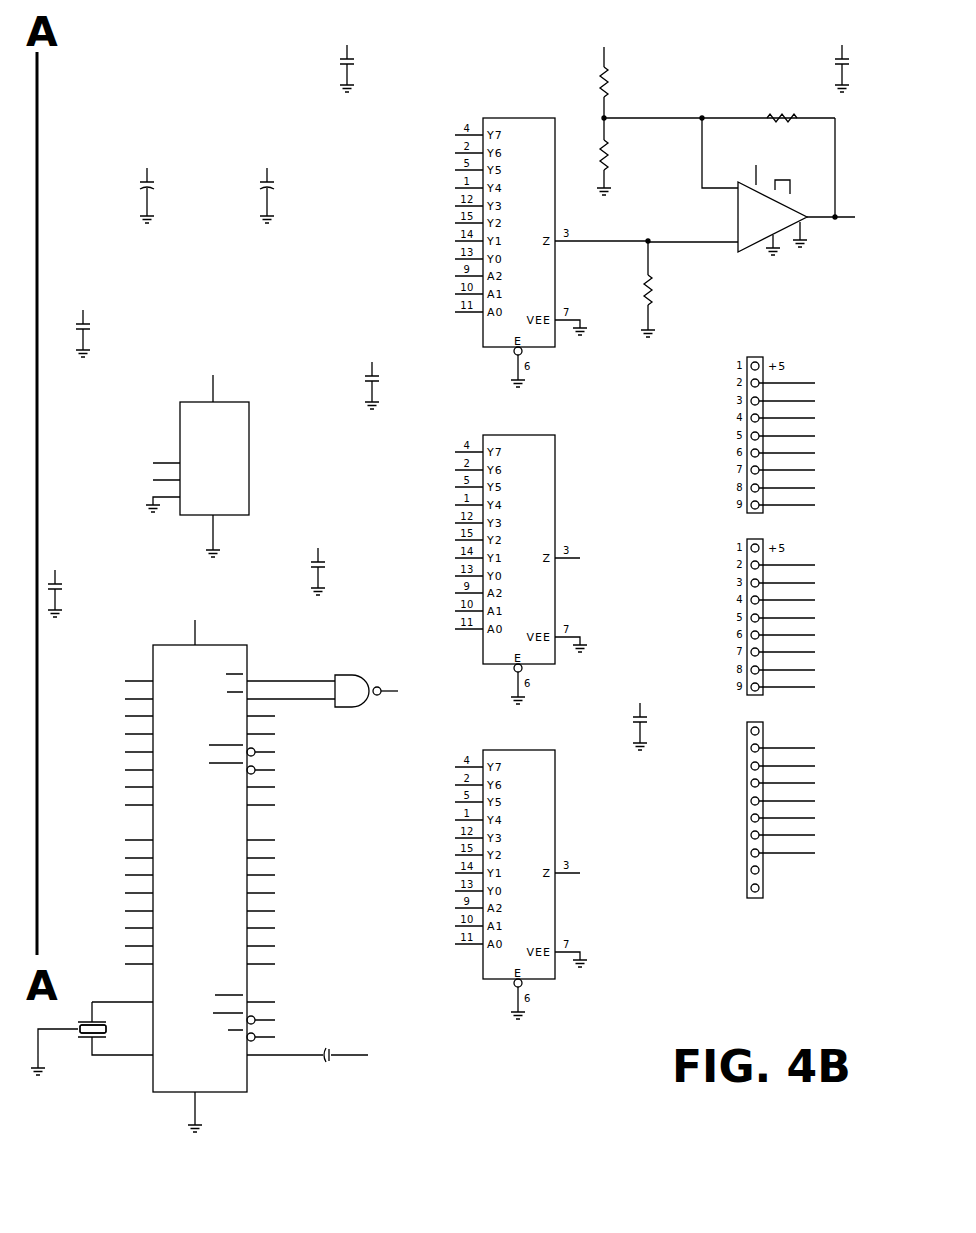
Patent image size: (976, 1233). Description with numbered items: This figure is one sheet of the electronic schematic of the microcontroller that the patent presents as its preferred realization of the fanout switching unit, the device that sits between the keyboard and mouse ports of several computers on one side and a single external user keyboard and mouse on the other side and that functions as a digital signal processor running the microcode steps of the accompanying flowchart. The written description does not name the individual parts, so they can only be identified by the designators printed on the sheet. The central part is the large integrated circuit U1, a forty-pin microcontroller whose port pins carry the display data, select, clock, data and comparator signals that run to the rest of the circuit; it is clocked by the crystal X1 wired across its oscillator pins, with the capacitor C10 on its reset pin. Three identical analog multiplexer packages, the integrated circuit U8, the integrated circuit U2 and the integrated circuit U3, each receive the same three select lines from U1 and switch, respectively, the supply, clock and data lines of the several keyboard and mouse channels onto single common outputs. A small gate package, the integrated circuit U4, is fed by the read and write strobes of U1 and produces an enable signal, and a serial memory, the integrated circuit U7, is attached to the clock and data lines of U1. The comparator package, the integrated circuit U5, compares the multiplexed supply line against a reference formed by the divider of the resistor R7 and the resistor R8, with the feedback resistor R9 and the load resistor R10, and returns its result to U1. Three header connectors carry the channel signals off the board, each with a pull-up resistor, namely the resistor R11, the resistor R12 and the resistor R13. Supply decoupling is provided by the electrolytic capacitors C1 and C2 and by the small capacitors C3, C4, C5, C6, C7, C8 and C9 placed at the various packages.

The 87C51FC microcontroller U1 is at (183, 869).
The 4051 analog multiplexer (clock) U2 is at (511, 557).
The 4051 analog multiplexer (data) U3 is at (511, 872).
The 7S00 NAND gate U4 is at (378, 686).
The LM311 comparator U5 is at (774, 224).
The 24LC02B EEPROM U7 is at (210, 459).
The 4051 analog multiplexer (VCC) U8 is at (528, 240).
The capacitor 10uF C1 is at (158, 188).
The capacitor 10uF C2 is at (278, 188).
The capacitor 0.01uF C3 is at (371, 60).
The capacitor 0.01uF C4 is at (107, 325).
The capacitor 0.01uF C5 is at (396, 377).
The capacitor 0.01uF C6 is at (79, 585).
The capacitor 0.01uF C7 is at (342, 563).
The capacitor 0.01uF C8 is at (664, 718).
The capacitor 0.01uF C9 is at (866, 60).
The capacitor 2.2uF C10 is at (348, 1057).
The resistor 150 R7 is at (618, 75).
The resistor 470 R8 is at (618, 156).
The resistor 91K R9 is at (781, 117).
The resistor 4.7K R10 is at (664, 288).
The resistor 4.7K / connector R11 is at (802, 435).
The resistor 4.7K / connector R12 is at (802, 617).
The resistor 10K / connector R13 is at (796, 810).
The 16.0 MHz crystal X1 is at (100, 1067).